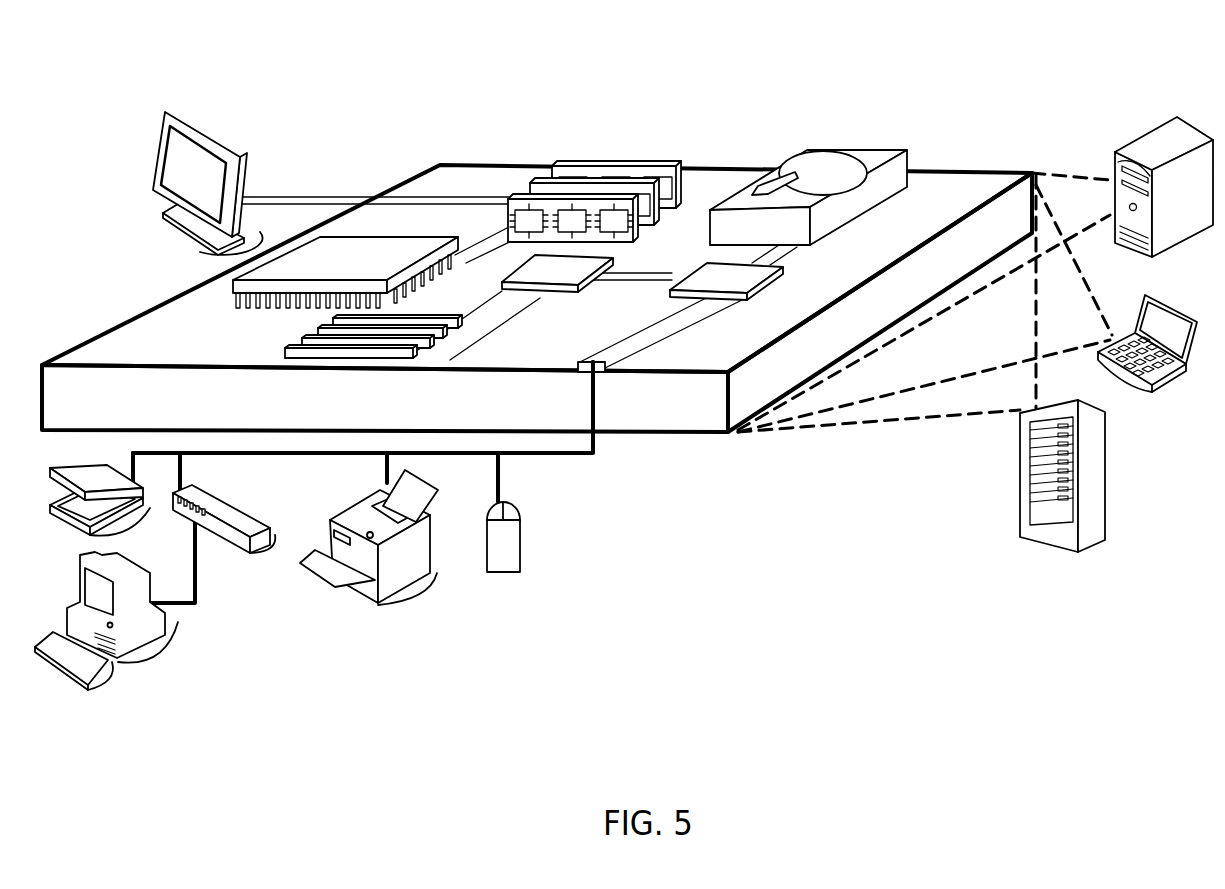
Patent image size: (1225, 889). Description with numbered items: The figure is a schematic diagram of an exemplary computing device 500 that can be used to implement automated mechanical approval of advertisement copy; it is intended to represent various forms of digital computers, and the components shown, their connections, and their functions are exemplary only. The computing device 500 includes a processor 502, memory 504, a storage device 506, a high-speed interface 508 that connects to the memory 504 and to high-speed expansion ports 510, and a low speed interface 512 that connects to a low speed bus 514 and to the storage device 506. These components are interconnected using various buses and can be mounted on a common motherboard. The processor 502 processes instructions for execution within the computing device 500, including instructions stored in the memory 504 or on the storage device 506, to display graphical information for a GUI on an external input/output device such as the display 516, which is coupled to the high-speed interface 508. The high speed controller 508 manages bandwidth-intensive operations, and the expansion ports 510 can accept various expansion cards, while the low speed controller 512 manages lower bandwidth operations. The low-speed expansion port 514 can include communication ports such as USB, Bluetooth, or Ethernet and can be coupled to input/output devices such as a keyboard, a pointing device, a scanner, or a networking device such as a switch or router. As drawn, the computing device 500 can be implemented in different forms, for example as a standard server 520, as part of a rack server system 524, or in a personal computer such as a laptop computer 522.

The computing device 500 is at (355, 41).
The processor 502 is at (232, 290).
The memory 504 is at (570, 160).
The storage device 506 is at (807, 157).
The high-speed interface 508 is at (530, 268).
The high-speed expansion ports 510 is at (287, 347).
The low speed interface 512 is at (728, 275).
The low speed bus 514 is at (605, 372).
The display 516 is at (157, 120).
The standard server 520 is at (1114, 160).
The laptop computer 522 is at (1145, 302).
The rack server system 524 is at (1020, 498).